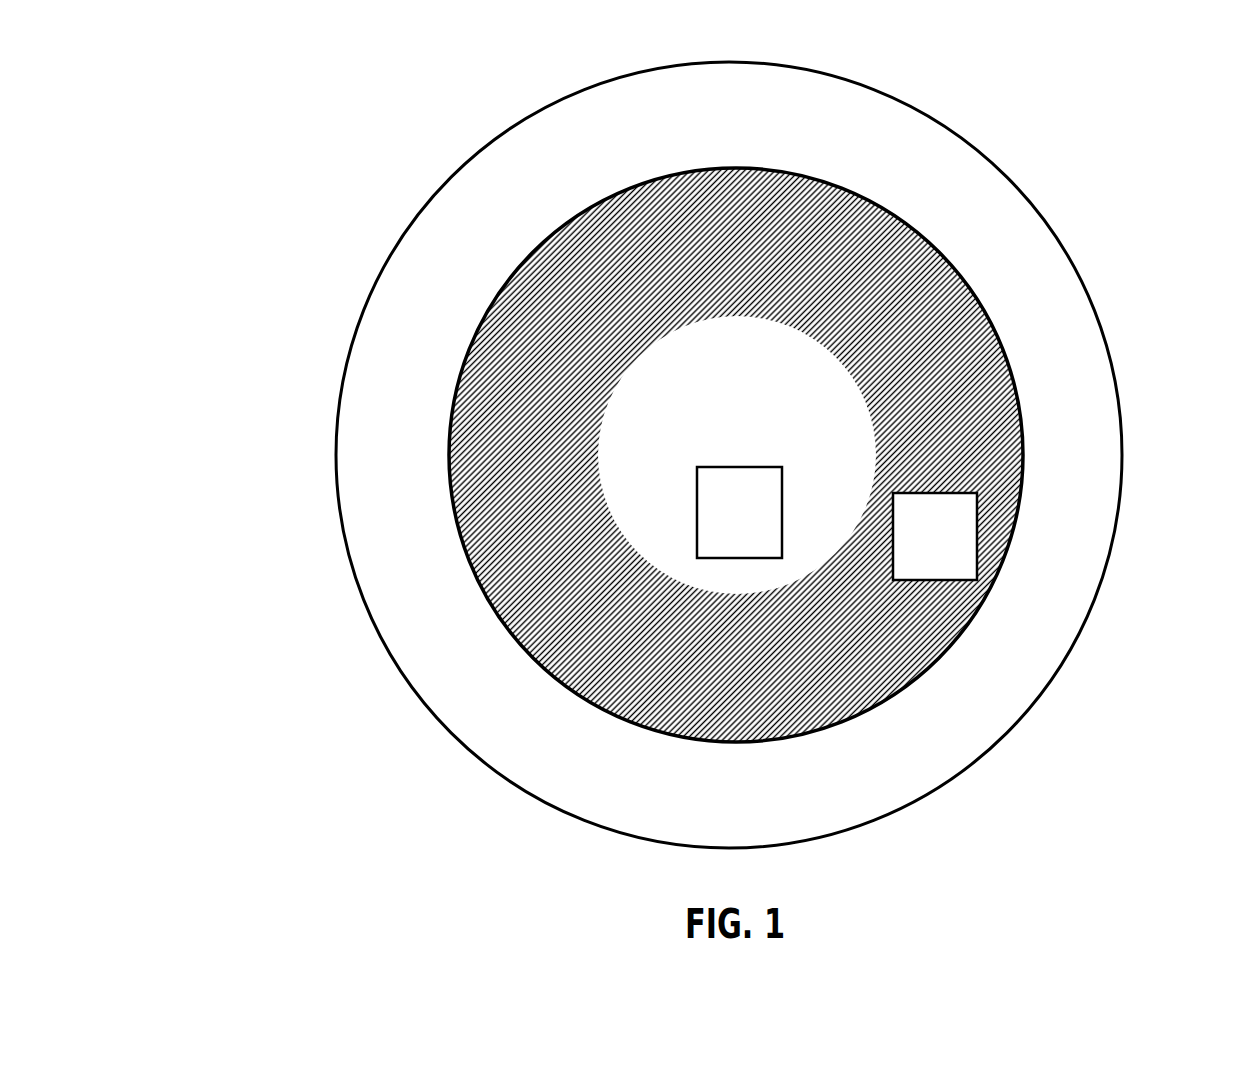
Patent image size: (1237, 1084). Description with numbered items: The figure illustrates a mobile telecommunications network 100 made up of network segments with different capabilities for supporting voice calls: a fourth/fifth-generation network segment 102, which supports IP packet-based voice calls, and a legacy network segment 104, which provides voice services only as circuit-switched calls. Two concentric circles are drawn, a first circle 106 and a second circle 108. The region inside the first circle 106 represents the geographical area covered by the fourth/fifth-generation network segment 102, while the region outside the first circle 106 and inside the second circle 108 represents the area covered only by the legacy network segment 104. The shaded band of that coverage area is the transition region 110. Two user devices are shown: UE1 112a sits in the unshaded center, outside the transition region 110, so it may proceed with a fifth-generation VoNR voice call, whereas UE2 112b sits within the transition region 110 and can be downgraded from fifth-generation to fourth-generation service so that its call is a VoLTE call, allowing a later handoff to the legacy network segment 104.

The mobile telecommunications network 100 is at (262, 106).
The 4G/5G network segment 102 is at (736, 395).
The legacy network segment 104 is at (738, 115).
The first circle 106 is at (1018, 395).
The second circle 108 is at (1108, 563).
The transition region 110 is at (920, 305).
The UE1 112a is at (739, 512).
The UE2 112b is at (935, 536).